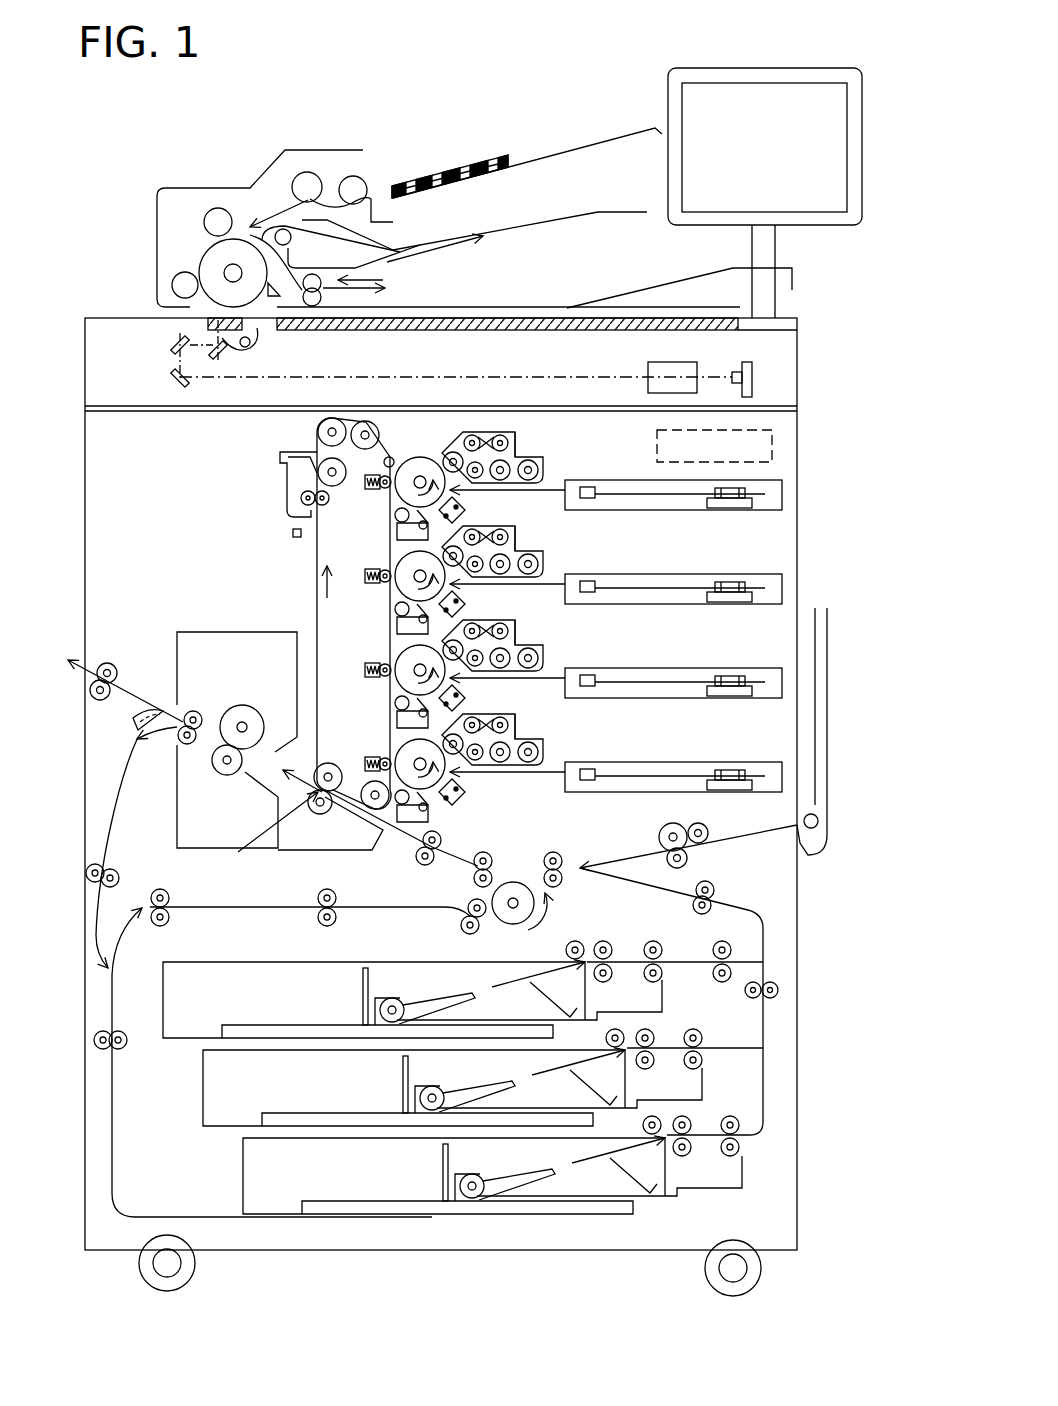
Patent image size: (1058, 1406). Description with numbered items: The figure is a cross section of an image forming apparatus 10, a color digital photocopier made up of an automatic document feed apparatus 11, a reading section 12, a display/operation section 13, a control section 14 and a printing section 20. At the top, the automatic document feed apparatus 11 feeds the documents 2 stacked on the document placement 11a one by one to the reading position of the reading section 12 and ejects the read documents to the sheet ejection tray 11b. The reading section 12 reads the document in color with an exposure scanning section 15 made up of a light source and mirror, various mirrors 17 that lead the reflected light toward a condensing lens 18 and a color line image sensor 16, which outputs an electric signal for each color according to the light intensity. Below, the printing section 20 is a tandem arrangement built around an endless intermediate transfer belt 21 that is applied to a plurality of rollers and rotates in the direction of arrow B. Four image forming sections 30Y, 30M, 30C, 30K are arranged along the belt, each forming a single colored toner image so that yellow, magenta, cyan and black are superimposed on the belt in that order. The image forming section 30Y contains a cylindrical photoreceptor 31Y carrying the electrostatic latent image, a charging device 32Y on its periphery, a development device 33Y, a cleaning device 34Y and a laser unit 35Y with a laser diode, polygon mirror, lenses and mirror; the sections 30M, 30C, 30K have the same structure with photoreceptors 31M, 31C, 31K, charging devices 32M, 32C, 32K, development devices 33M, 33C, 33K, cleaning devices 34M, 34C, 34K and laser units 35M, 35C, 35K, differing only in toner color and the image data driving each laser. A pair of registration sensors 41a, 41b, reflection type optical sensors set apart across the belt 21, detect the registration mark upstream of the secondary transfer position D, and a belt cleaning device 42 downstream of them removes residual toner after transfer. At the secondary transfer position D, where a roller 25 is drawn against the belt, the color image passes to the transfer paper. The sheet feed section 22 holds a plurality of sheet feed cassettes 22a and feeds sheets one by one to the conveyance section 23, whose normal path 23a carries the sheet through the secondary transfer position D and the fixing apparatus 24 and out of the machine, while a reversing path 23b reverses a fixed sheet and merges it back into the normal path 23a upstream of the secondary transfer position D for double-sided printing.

The image forming apparatus 10 is at (562, 70).
The display/operation section 13 is at (757, 68).
The automatic document feed apparatus 11 is at (200, 188).
The document placement 11a is at (595, 143).
The sheet ejection tray 11b is at (613, 212).
The documents 2 is at (510, 150).
The reading section 12 is at (799, 370).
The mirrors 17 is at (167, 335).
The exposure scanning section 15 is at (265, 344).
The condensing lens 18 is at (668, 362).
The color line image sensor 16 is at (752, 380).
The control section 14 is at (772, 445).
The printing section 20 is at (797, 470).
The intermediate transfer belt 21 is at (313, 551).
The direction of arrow B is at (325, 580).
The belt cleaning device 42 is at (280, 490).
The registration sensor 41a is at (293, 533).
The registration sensor 41b is at (234, 533).
The image forming section 30Y is at (560, 456).
The image forming section 30M is at (590, 548).
The image forming section 30C is at (590, 632).
The image forming section 30K is at (590, 725).
The photoreceptor 31Y is at (420, 470).
The photoreceptor 31M is at (397, 560).
The photoreceptor 31C is at (397, 652).
The photoreceptor 31K is at (397, 746).
The charging device 32Y is at (465, 502).
The charging device 32M is at (462, 597).
The charging device 32C is at (460, 688).
The charging device 32K is at (460, 782).
The development device 33Y is at (515, 432).
The development device 33M is at (515, 530).
The development device 33C is at (515, 623).
The development device 33K is at (515, 717).
The cleaning device 34Y is at (398, 519).
The cleaning device 34M is at (396, 611).
The cleaning device 34C is at (396, 705).
The cleaning device 34K is at (432, 808).
The laser unit 35Y is at (735, 510).
The laser unit 35M is at (735, 604).
The laser unit 35C is at (735, 698).
The laser unit 35K is at (735, 792).
The fixing apparatus 24 is at (207, 632).
The secondary transfer roller 25 is at (318, 814).
The secondary transfer position D is at (270, 837).
The normal path 23a is at (132, 690).
The reversing path 23b is at (242, 908).
The conveyance section 23 is at (775, 915).
The sheet feed section 22 is at (388, 1088).
The sheet feed cassette 22a is at (163, 1007).